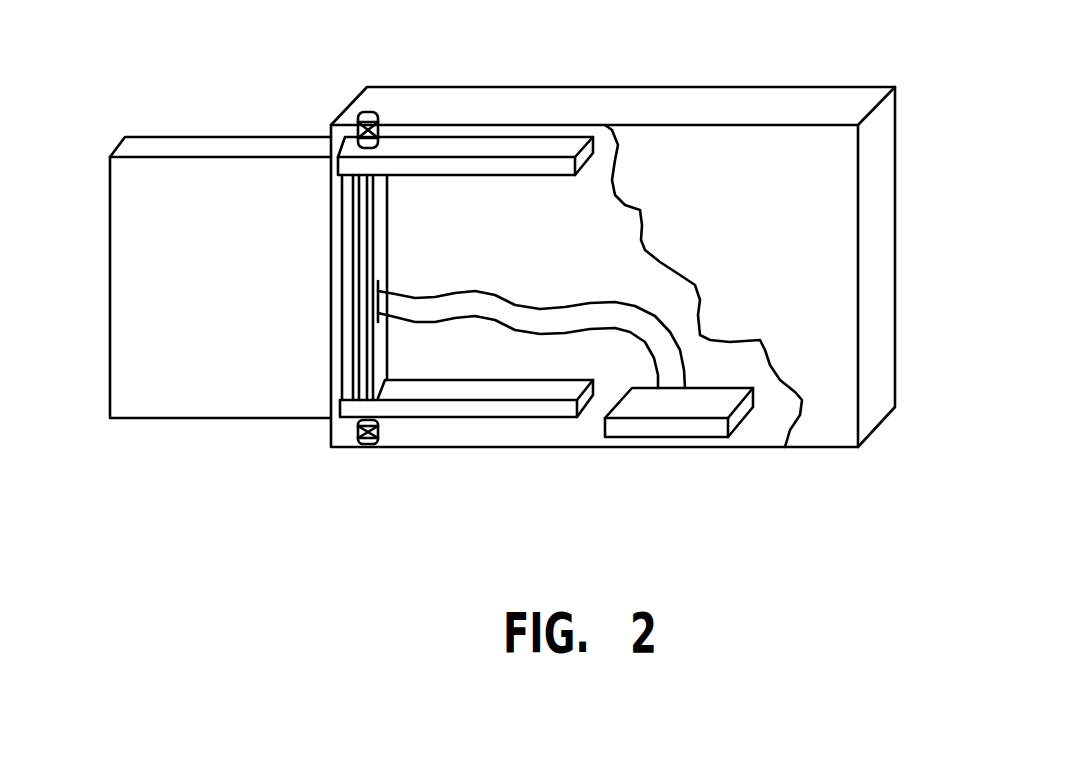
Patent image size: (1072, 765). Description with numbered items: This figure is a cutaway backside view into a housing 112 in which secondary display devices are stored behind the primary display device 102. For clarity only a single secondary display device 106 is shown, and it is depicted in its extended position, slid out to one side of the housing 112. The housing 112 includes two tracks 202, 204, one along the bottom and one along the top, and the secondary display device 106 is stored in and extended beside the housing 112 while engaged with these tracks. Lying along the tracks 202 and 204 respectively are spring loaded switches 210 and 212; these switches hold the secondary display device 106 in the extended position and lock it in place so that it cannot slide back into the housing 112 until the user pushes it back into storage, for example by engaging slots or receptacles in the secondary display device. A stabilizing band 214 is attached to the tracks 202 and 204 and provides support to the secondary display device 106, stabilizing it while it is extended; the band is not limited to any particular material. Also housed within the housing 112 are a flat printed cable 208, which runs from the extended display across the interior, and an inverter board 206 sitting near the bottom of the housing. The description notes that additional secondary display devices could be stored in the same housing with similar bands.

The primary display device 102 is at (815, 85).
The secondary display device 106 is at (221, 143).
The housing 112 is at (920, 245).
The track 202 is at (520, 408).
The track 204 is at (503, 148).
The inverter board 206 is at (673, 428).
The flat printed cable 208 is at (498, 290).
The spring loaded switch 210 is at (380, 430).
The spring loaded switch 212 is at (380, 113).
The stabilizing band 214 is at (350, 370).